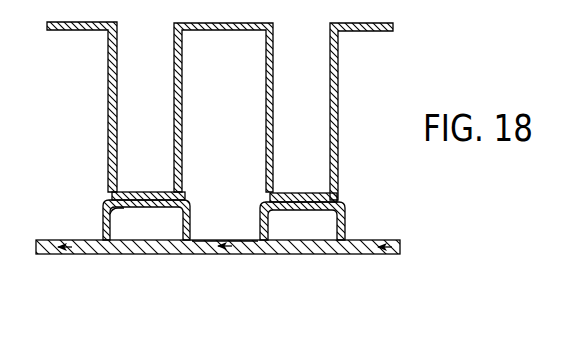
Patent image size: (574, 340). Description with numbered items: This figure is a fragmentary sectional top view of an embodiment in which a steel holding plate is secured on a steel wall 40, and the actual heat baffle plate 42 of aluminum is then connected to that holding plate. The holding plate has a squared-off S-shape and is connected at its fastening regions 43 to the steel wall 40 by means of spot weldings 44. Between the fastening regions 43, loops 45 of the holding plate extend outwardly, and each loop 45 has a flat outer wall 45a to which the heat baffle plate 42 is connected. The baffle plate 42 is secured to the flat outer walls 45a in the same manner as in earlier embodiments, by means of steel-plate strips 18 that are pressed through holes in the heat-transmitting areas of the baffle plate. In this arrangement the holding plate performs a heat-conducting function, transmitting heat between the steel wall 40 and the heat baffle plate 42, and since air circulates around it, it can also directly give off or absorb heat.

The steel-plate strip 18 is at (128, 192).
The steel wall 40 is at (402, 250).
The heat baffle plate 42 is at (358, 75).
The fastening region 43 is at (200, 246).
The spot welding 44 is at (226, 249).
The loop 45 is at (105, 235).
The flat outer wall 45a is at (107, 220).